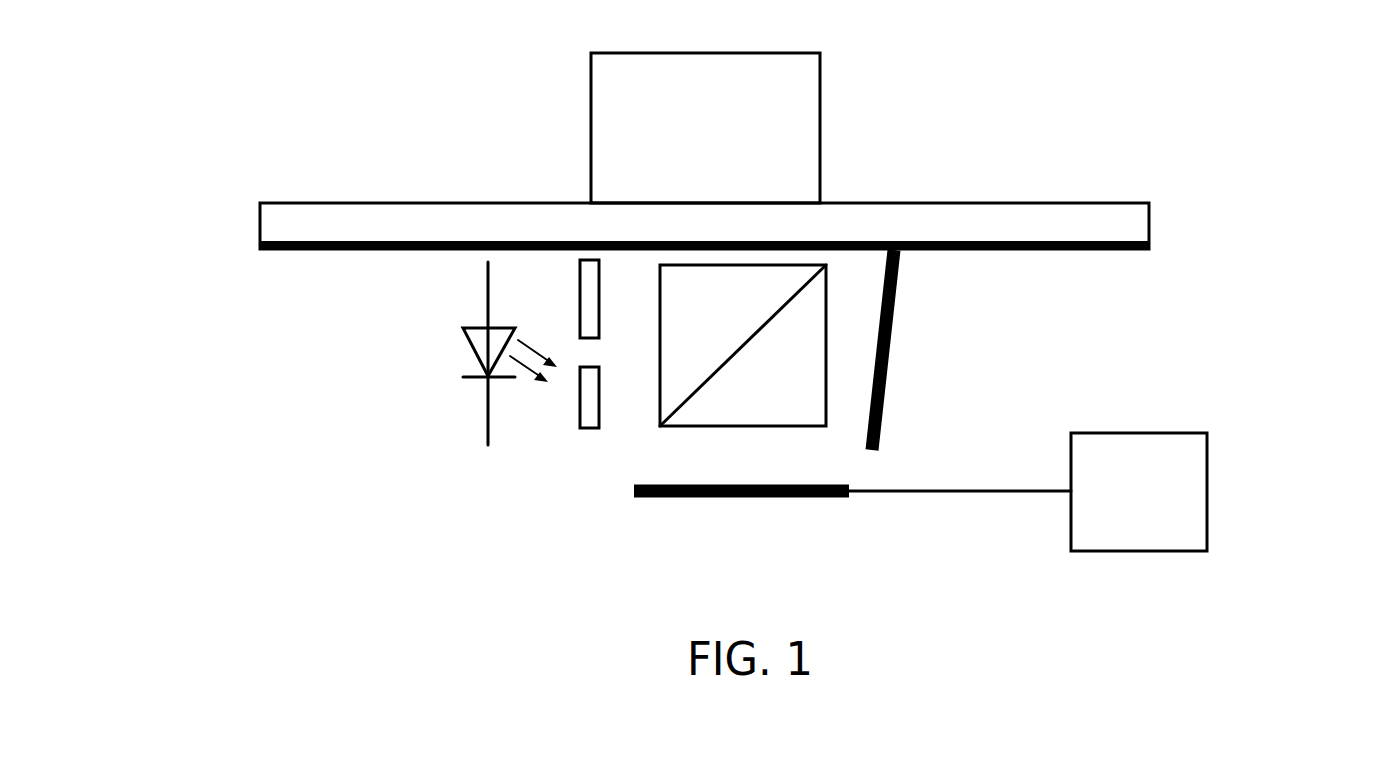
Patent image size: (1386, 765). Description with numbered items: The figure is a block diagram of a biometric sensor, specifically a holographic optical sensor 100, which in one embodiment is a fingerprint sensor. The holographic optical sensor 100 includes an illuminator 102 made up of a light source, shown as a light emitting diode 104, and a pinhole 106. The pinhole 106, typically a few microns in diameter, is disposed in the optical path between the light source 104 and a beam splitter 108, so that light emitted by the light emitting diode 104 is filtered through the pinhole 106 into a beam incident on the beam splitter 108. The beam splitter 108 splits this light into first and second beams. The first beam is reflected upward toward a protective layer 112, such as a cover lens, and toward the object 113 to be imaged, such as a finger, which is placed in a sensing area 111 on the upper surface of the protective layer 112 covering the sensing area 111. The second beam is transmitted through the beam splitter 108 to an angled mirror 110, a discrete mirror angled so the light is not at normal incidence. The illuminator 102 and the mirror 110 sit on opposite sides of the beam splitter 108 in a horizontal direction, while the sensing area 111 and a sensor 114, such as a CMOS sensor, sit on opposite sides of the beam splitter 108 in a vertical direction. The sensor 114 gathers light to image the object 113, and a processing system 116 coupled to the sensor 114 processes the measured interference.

The holographic optical sensor 100 is at (258, 138).
The illuminator 102 is at (233, 384).
The light emitting diode 104 is at (465, 343).
The pinhole 106 is at (580, 418).
The beam splitter 108 is at (740, 427).
The angled mirror 110 is at (888, 350).
The sensing area 111 is at (525, 240).
The protective layer 112 is at (1150, 225).
The object 113 is at (821, 97).
The sensor 114 is at (743, 498).
The processing system 116 is at (1207, 489).